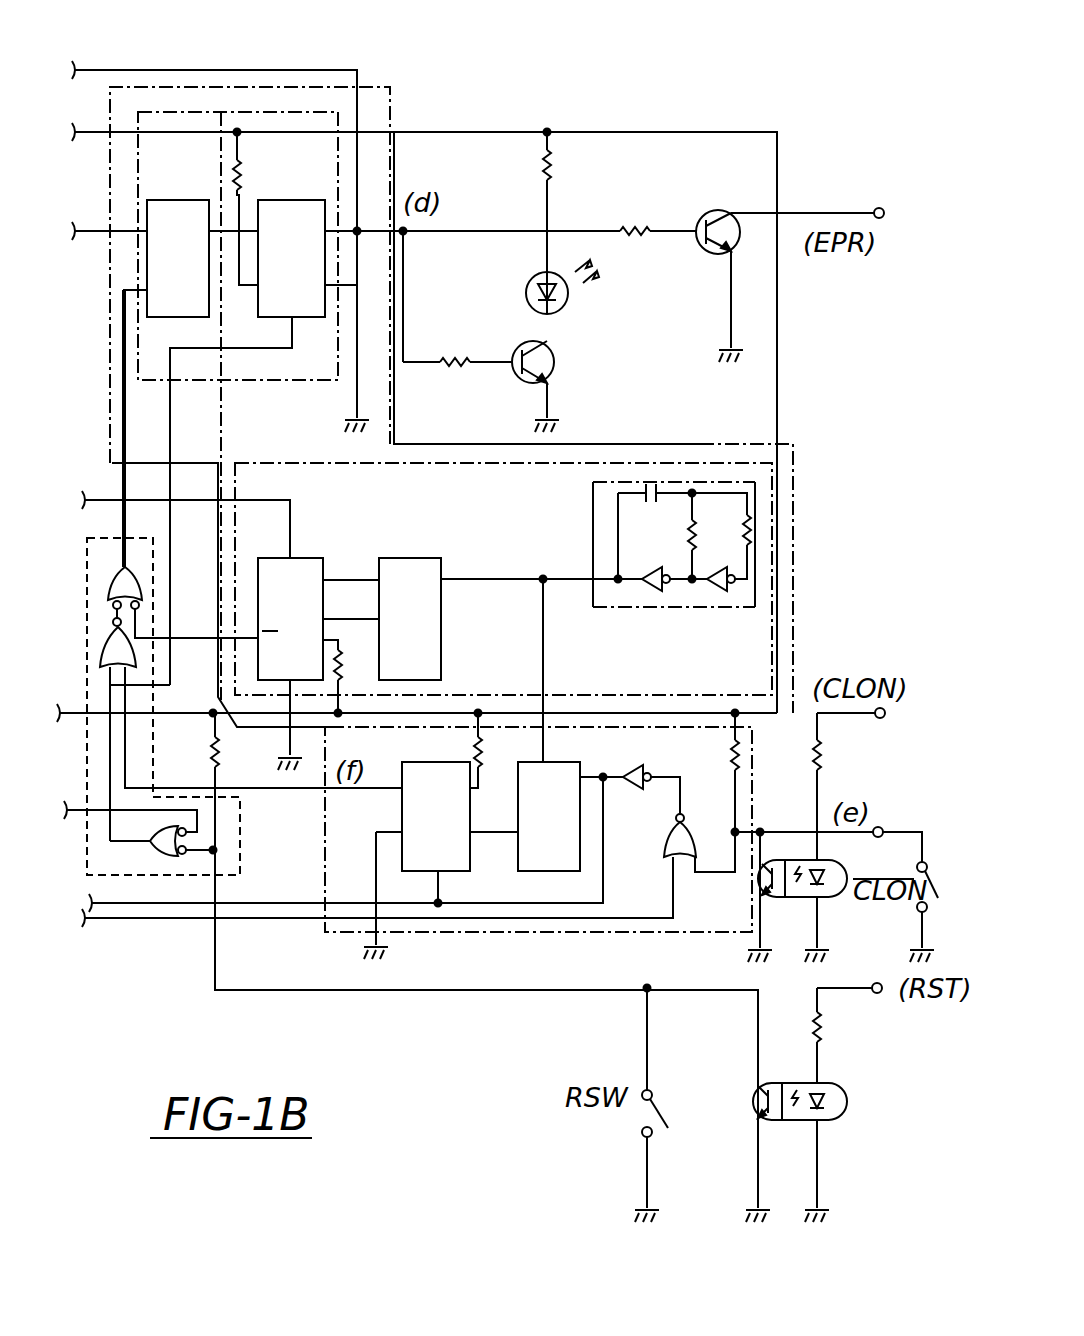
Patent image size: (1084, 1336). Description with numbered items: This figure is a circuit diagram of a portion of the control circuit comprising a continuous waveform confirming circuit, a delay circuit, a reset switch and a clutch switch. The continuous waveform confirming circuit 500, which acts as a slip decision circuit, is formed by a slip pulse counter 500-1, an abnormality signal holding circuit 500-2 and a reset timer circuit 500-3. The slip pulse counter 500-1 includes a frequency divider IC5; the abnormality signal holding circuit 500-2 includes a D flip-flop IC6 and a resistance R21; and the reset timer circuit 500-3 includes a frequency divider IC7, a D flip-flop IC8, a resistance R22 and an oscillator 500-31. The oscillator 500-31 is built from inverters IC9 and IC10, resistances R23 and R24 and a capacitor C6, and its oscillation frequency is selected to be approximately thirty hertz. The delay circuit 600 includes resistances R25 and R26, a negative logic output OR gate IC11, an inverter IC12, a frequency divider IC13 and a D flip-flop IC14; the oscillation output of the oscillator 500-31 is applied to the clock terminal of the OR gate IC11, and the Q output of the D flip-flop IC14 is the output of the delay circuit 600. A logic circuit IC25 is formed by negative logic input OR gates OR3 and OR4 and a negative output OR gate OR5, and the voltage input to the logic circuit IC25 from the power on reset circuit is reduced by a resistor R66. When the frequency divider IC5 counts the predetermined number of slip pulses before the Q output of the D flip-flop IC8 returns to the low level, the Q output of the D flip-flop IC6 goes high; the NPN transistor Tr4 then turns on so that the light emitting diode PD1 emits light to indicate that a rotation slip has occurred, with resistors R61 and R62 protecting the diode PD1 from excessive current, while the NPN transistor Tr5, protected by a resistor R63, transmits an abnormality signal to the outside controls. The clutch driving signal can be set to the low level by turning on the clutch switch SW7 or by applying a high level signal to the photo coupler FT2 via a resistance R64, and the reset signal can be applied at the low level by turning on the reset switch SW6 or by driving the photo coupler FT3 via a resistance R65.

The continuous waveform confirming circuit 500 is at (316, 85).
The slip pulse counter 500-1 is at (150, 112).
The abnormality signal holding circuit 500-2 is at (396, 120).
The reset timer circuit 500-3 is at (747, 462).
The oscillator 500-31 is at (755, 520).
The delay circuit 600 is at (455, 935).
The frequency divider IC5 is at (172, 200).
The D flip-flop IC6 is at (292, 200).
The frequency divider IC7 is at (410, 558).
The D flip-flop IC8 is at (306, 558).
The inverter IC9 is at (646, 590).
The inverter IC10 is at (715, 590).
The negative logic output OR gate IC11 is at (674, 848).
The inverter IC12 is at (632, 790).
The frequency divider IC13 is at (530, 762).
The D flip-flop IC14 is at (473, 850).
The logic circuit IC25 is at (92, 880).
The negative logic input OR gate OR3 is at (160, 858).
The negative logic input OR gate OR4 is at (118, 590).
The negative output OR gate OR5 is at (138, 663).
The resistance R21 is at (240, 165).
The resistance R22 is at (335, 693).
The resistance R23 is at (663, 536).
The resistance R24 is at (721, 536).
The resistance R25 is at (442, 750).
The resistance R26 is at (696, 772).
The resistor R61 is at (457, 344).
The resistor R62 is at (580, 202).
The resistor R63 is at (643, 248).
The resistance R64 is at (848, 741).
The resistance R65 is at (849, 1017).
The resistor R66 is at (188, 752).
The capacitor C6 is at (632, 493).
The light emitting diode PD1 is at (576, 291).
The NPN transistor Tr4 is at (559, 386).
The NPN transistor Tr5 is at (719, 265).
The photo coupler FT2 is at (802, 896).
The photo coupler FT3 is at (819, 1119).
The reset switch SW6 is at (642, 1126).
The clutch switch SW7 is at (924, 862).